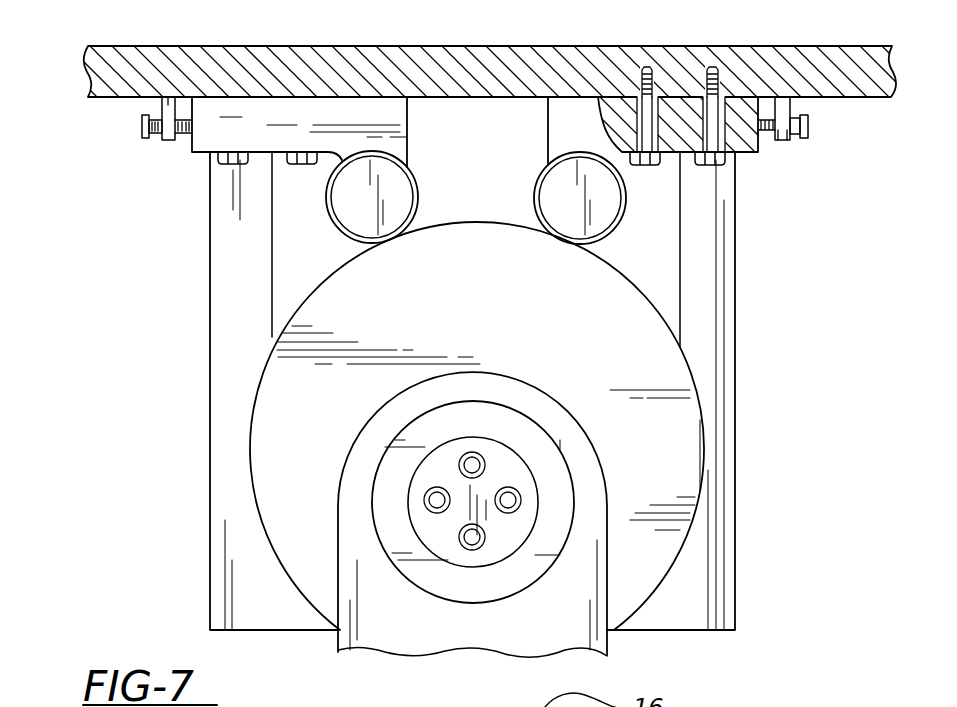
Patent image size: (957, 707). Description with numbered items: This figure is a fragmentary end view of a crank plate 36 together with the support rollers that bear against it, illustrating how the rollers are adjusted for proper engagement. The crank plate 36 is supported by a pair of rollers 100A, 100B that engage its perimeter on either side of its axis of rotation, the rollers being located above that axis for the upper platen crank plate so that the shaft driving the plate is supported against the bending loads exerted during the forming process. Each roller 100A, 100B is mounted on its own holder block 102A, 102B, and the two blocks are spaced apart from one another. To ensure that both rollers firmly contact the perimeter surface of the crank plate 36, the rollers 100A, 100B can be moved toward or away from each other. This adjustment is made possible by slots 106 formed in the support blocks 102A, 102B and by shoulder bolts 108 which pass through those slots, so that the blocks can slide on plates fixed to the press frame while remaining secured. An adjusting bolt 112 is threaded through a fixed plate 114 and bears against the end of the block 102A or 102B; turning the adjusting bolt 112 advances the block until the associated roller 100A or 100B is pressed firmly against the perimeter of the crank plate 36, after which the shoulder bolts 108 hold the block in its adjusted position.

The crank plate 36 is at (676, 590).
The roller 100A is at (305, 250).
The roller 100B is at (646, 244).
The holder block 102A is at (309, 110).
The holder block 102B is at (614, 98).
The slot 106 is at (728, 128).
The shoulder bolt 108 is at (300, 182).
The adjusting bolt 112 is at (128, 125).
The fixed plate 114 is at (167, 156).